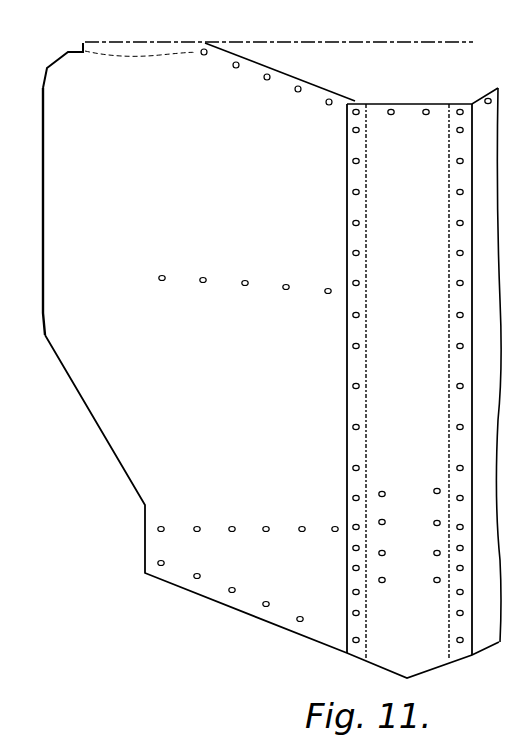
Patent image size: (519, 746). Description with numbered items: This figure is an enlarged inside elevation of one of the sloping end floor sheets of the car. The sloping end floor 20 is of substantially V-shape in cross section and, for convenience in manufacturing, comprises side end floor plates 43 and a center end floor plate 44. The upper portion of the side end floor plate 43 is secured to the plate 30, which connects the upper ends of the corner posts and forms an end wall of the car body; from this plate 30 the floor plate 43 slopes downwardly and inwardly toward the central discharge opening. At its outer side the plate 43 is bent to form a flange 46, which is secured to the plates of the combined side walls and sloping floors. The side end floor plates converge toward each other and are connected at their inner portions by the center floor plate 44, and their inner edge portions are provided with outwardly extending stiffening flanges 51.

The plate 30 is at (349, 64).
The flange 46 is at (44, 178).
The side end floor plate 43 is at (272, 360).
The sloping end floor 20 is at (424, 371).
The center end floor plate 44 is at (409, 376).
The stiffening flange 51 is at (449, 210).